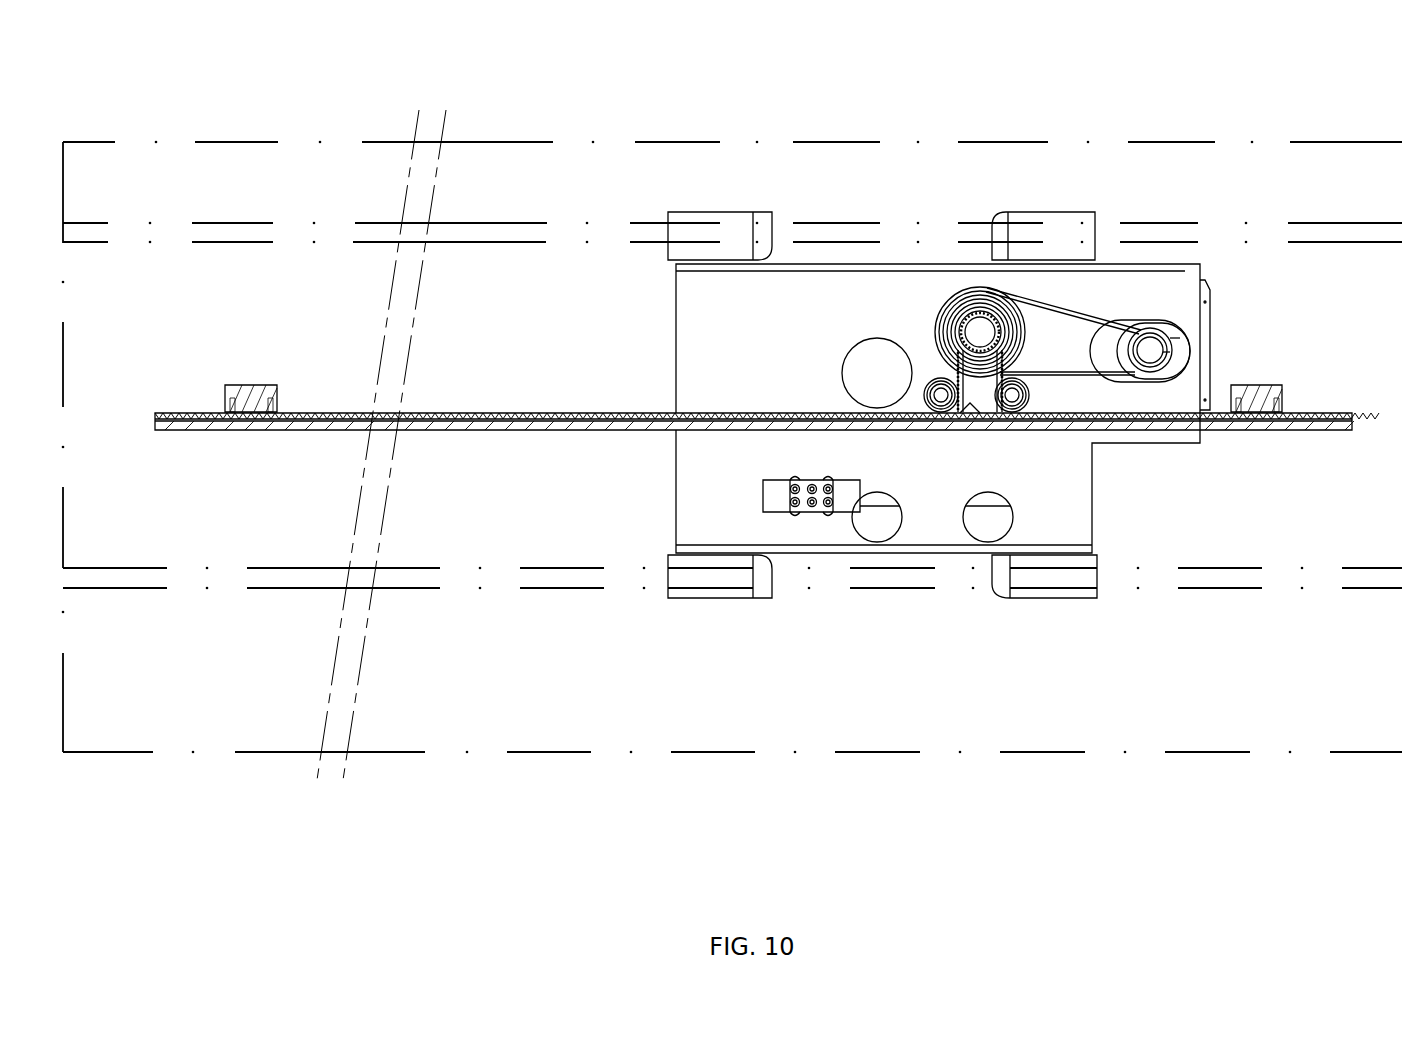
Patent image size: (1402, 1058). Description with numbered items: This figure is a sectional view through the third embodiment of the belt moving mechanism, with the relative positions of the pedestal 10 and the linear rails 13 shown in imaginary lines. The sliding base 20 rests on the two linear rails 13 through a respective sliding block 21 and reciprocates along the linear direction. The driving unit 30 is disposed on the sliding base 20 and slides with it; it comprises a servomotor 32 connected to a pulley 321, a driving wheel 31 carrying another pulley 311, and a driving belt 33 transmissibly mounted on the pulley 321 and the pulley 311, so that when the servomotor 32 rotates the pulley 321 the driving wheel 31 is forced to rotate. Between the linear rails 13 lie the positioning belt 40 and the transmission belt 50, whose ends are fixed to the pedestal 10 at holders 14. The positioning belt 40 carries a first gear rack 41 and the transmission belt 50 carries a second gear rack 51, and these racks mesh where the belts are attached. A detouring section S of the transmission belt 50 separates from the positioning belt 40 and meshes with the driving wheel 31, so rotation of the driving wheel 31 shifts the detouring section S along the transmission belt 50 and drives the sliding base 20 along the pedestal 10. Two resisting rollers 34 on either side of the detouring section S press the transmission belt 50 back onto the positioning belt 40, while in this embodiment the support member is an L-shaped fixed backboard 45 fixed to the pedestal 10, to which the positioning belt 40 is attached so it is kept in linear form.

The pedestal 10 is at (377, 143).
The linear rails 13 is at (238, 225).
The holder 14 is at (257, 390).
The sliding base 20 is at (790, 217).
The sliding block 21 is at (1073, 210).
The driving unit 30 is at (1183, 350).
The driving wheel 31 is at (979, 326).
The pulley 311 is at (997, 289).
The servomotor 32 is at (1177, 330).
The pulley 321 is at (1150, 333).
The driving belt 33 is at (1100, 312).
The resisting rollers 34 is at (932, 383).
The positioning belt 40 is at (585, 432).
The first gear rack 41 is at (965, 412).
The fixed backboard 45 is at (512, 433).
The transmission belt 50 is at (578, 412).
The second gear rack 51 is at (982, 397).
The detouring section S is at (958, 348).